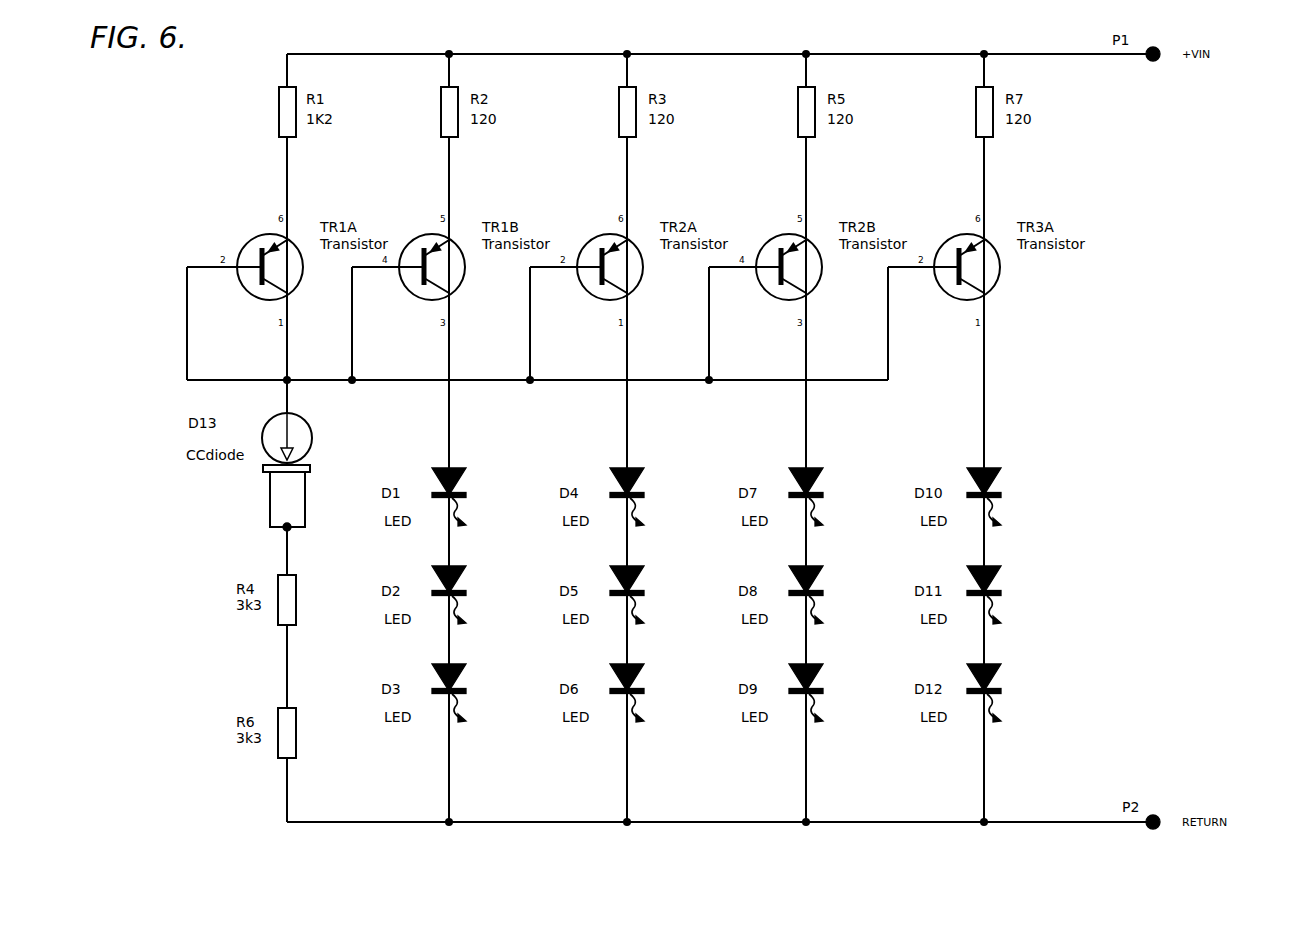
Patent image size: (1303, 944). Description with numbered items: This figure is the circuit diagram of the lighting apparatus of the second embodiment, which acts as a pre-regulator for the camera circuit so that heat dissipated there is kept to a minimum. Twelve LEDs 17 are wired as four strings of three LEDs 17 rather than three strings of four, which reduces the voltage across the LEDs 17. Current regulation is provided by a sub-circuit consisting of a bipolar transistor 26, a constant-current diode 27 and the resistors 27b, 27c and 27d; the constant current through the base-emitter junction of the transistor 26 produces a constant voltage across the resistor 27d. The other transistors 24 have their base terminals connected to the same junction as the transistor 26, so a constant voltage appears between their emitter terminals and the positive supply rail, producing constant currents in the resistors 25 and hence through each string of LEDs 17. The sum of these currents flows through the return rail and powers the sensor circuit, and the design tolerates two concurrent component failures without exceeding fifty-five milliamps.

The LED 17 is at (455, 466).
The transistor 24 is at (418, 238).
The resistor 25 is at (441, 100).
The bipolar transistor 26 is at (247, 244).
The constant-current diode 27 is at (270, 497).
The resistor 27b is at (278, 578).
The resistor 27c is at (278, 710).
The resistor 27d is at (279, 100).